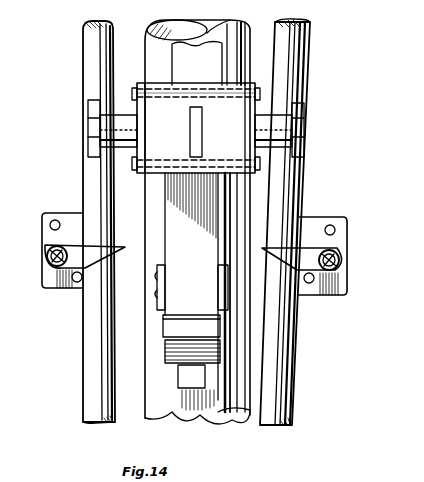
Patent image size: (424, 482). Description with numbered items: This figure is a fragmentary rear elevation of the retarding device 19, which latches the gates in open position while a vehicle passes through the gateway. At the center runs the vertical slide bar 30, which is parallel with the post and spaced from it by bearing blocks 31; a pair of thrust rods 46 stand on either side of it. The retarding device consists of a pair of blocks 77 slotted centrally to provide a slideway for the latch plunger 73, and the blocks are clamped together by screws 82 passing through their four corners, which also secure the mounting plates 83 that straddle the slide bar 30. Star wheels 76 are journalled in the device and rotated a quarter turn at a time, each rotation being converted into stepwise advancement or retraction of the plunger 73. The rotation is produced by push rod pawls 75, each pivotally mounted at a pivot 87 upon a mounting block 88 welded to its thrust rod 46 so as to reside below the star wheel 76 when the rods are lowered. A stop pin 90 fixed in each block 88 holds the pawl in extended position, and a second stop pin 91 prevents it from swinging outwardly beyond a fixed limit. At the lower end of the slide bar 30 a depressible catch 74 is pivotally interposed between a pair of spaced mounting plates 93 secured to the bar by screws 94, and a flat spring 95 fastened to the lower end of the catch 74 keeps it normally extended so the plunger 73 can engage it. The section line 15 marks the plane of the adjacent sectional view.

The section line 15- 15 is at (68, 98).
The retarding device 19 is at (188, 88).
The slide bar 30 is at (180, 240).
The bearing block 31 is at (166, 412).
The thrust rod 46 is at (100, 378).
The latch plunger 73 is at (196, 125).
The depressible catch 74 is at (167, 350).
The push rod pawl 75 is at (70, 246).
The star wheel 76 is at (94, 102).
The block 77 is at (157, 98).
The screw 82 is at (260, 95).
The mounting plate 83 is at (136, 121).
The pivot 87 is at (47, 257).
The mounting block 88 is at (70, 213).
The stop pin 90 is at (76, 283).
The second stop pin 91 is at (50, 224).
The mounting plate 93 is at (216, 290).
The screw 94 is at (157, 270).
The flat spring 95 is at (188, 375).